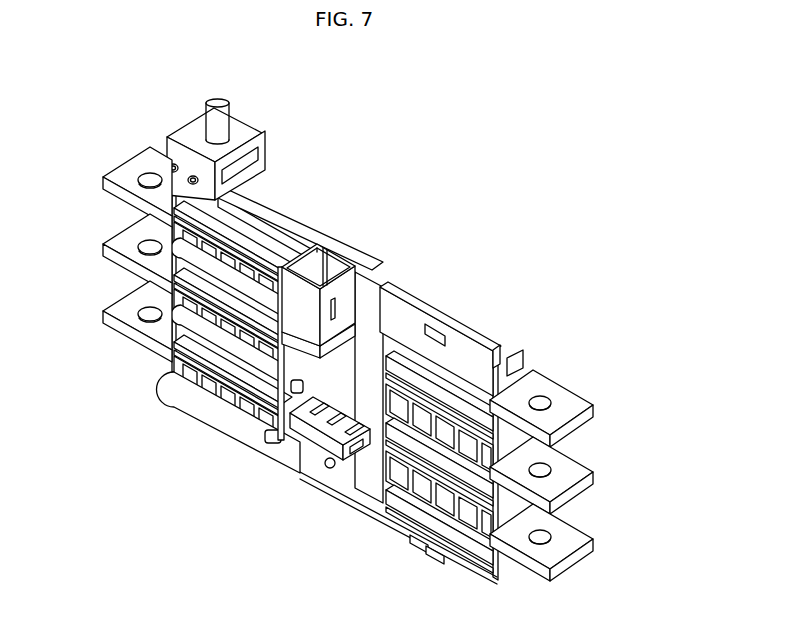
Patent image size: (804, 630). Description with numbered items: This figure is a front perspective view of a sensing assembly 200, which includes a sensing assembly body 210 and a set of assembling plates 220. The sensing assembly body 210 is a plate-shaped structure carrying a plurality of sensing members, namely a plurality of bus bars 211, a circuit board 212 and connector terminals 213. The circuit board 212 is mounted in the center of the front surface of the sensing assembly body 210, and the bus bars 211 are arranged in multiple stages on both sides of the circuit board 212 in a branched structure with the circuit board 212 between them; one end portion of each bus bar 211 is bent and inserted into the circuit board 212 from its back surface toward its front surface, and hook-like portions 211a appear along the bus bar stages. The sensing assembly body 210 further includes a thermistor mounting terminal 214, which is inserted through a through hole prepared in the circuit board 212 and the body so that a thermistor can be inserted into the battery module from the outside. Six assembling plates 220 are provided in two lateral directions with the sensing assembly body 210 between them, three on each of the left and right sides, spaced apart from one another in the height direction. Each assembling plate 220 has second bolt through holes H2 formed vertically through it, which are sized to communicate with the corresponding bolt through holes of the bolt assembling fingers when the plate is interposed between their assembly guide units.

The sensing assembly 200 is at (562, 114).
The sensing assembly body 210 is at (350, 341).
The bus bars 211 is at (250, 345).
The hook 211a is at (268, 440).
The circuit board 212 is at (369, 298).
The connector terminals 213 is at (341, 290).
The thermistor mounting terminal 214 is at (333, 432).
The assembling plate 220 is at (125, 169).
The second bolt through holes H2 is at (153, 172).